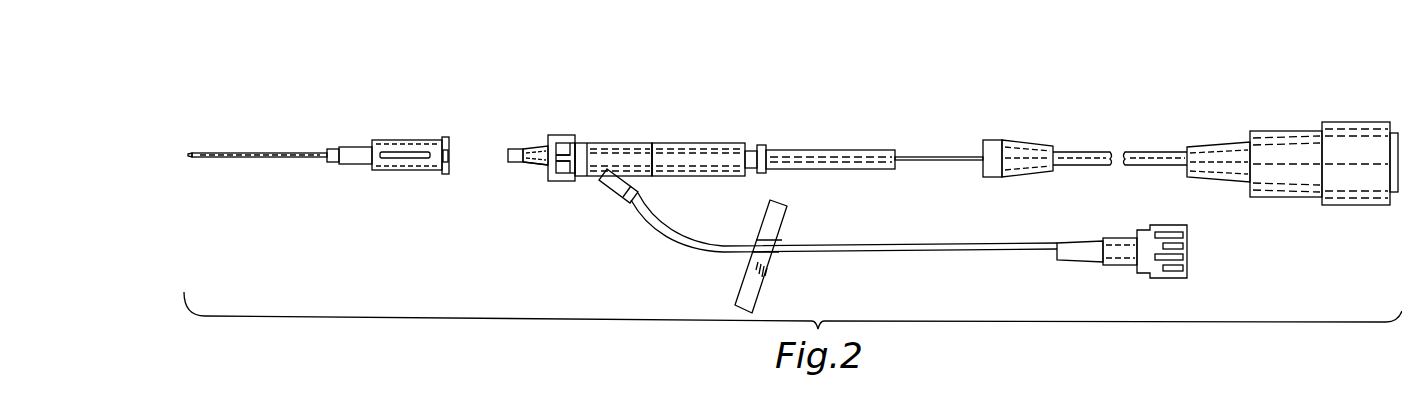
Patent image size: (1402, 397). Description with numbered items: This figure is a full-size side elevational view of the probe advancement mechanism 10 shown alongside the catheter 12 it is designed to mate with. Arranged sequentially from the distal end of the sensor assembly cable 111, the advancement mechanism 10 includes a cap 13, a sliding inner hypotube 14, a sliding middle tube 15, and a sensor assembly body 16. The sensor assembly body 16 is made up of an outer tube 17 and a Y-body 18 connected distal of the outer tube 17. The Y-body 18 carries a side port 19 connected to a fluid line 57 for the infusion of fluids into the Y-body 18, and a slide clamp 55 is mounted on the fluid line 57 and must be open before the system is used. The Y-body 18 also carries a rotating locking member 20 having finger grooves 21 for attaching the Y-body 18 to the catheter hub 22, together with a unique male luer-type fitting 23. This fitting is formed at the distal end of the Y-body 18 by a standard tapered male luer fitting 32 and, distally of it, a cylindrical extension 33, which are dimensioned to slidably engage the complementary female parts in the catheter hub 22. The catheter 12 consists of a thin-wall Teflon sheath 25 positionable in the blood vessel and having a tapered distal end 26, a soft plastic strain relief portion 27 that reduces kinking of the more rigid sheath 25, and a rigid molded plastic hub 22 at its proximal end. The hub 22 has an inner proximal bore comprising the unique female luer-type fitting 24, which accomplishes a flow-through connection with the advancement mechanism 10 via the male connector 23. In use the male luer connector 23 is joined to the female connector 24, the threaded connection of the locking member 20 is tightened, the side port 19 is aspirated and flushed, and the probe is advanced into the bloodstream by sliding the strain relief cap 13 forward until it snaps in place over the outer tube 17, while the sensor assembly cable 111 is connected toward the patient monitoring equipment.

The advancement mechanism 10 is at (882, 121).
The catheter 12 is at (314, 121).
The cap 13 is at (1016, 140).
The sliding inner hypotube 14 is at (930, 157).
The sliding middle tube 15 is at (826, 150).
The sensor assembly body 16 is at (661, 135).
The outer tube 17 is at (718, 143).
The Y-body 18 is at (620, 143).
The side port 19 is at (611, 192).
The rotating locking member 20 is at (562, 136).
The finger grooves 21 is at (564, 162).
The catheter hub 22 is at (421, 140).
The male luer-type fitting 23 is at (529, 171).
The female luer-type fitting 24 is at (454, 177).
The Teflon sheath 25 is at (255, 152).
The tapered distal end 26 is at (192, 150).
The strain relief portion 27 is at (348, 146).
The standard tapered male luer fitting 32 is at (538, 150).
The cylindrical extension 33 is at (510, 148).
The slide clamp 55 is at (789, 217).
The fluid line 57 is at (918, 251).
The sensor assembly cable 111 is at (1085, 152).